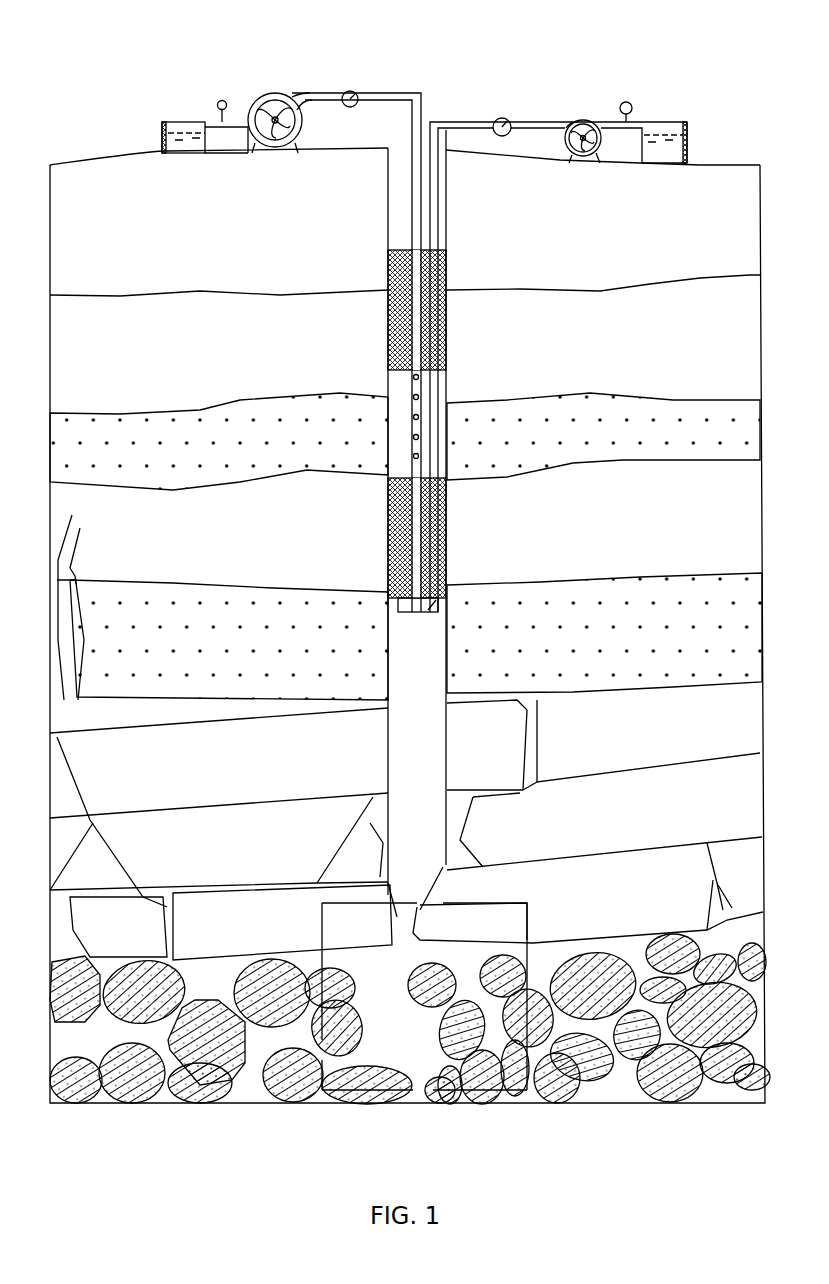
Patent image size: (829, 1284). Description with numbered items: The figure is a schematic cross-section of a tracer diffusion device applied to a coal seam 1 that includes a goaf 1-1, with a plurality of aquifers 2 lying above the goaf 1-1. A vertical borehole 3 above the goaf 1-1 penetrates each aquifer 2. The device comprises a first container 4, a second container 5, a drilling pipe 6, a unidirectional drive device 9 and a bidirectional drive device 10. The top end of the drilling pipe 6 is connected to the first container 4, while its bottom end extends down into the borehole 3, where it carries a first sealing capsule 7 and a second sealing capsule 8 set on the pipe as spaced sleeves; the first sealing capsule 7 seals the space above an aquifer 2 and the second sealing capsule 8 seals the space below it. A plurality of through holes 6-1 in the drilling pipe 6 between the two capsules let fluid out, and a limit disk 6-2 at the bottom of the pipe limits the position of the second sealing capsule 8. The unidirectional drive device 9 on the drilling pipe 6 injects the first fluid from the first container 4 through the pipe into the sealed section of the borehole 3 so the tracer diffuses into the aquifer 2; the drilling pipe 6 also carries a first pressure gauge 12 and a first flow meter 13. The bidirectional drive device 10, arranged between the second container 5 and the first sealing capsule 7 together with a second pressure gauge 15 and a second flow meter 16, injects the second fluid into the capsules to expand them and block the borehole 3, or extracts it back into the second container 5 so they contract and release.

The coal seam 1 is at (205, 998).
The goaf 1-1 is at (530, 900).
The aquifer 2 is at (82, 440).
The borehole 3 is at (386, 762).
The first container 4 is at (160, 150).
The second container 5 is at (666, 147).
The drilling pipe 6 is at (411, 88).
The through hole 6-1 is at (411, 413).
The limit disk 6-2 is at (448, 590).
The first sealing capsule 7 is at (386, 256).
The second sealing capsule 8 is at (386, 562).
The unidirectional drive device 9 is at (283, 90).
The bidirectional drive device 10 is at (585, 120).
The first pressure gauge 12 is at (216, 100).
The first flow meter 13 is at (347, 92).
The second pressure gauge 15 is at (630, 102).
The second flow meter 16 is at (500, 117).